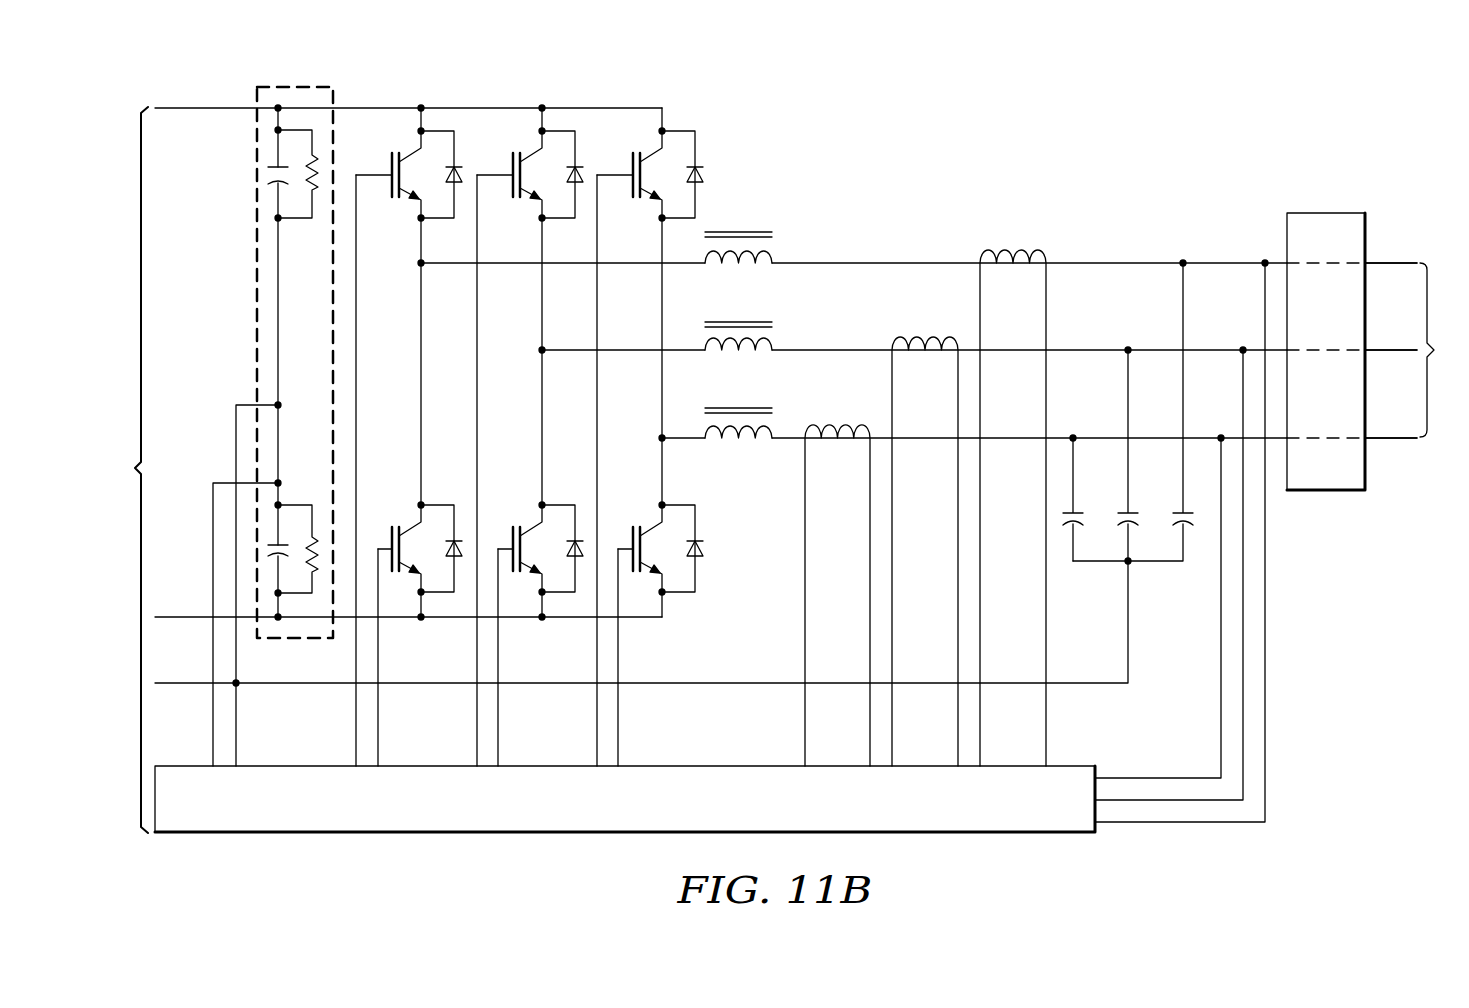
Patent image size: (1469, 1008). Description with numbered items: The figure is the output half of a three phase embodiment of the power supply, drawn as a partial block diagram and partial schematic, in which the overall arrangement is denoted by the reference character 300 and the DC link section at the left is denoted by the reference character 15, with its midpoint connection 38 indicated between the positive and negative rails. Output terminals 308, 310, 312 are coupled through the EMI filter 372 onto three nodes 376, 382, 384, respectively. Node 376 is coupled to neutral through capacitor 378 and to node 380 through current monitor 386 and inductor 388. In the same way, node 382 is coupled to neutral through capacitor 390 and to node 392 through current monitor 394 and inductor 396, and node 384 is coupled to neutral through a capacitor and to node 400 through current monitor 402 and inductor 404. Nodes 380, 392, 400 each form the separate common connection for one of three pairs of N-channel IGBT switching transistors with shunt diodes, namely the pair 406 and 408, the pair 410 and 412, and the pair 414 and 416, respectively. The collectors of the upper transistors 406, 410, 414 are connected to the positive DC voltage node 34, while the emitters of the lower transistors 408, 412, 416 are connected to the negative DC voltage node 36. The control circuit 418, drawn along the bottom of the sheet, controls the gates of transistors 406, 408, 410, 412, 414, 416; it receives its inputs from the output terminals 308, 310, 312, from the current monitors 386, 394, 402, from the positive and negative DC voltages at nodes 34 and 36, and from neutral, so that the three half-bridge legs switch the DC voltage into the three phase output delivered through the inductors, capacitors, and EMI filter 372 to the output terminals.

The DC bus filter network 15 is at (257, 157).
The positive DC voltage node 34 is at (483, 107).
The negative DC voltage node 36 is at (440, 620).
The DC bus midpoint connection 38 is at (279, 271).
The inverter 300 is at (783, 478).
The output terminal 308 is at (1383, 265).
The output terminal 310 is at (1383, 353).
The output terminal 312 is at (1383, 440).
The EMI filter 372 is at (1323, 212).
The node 376 is at (1234, 262).
The capacitor 378 is at (1196, 518).
The node 380 is at (409, 437).
The node 382 is at (1218, 350).
The node 384 is at (1200, 438).
The current monitor 386 is at (1013, 245).
The inductor 388 is at (738, 231).
The capacitor 390 is at (1133, 513).
The node 392 is at (530, 437).
The current monitor 394 is at (927, 334).
The inductor 396 is at (738, 321).
The node 400 is at (650, 437).
The current monitor 402 is at (838, 420).
The inductor 404 is at (738, 407).
The N-channel IGBT switching transistor 406 is at (384, 188).
The N-channel IGBT switching transistor 408 is at (381, 538).
The N-channel IGBT switching transistor 410 is at (504, 188).
The N-channel IGBT switching transistor 412 is at (501, 538).
The N-channel IGBT switching transistor 414 is at (624, 188).
The N-channel IGBT switching transistor 416 is at (621, 538).
The control circuit 418 is at (432, 834).